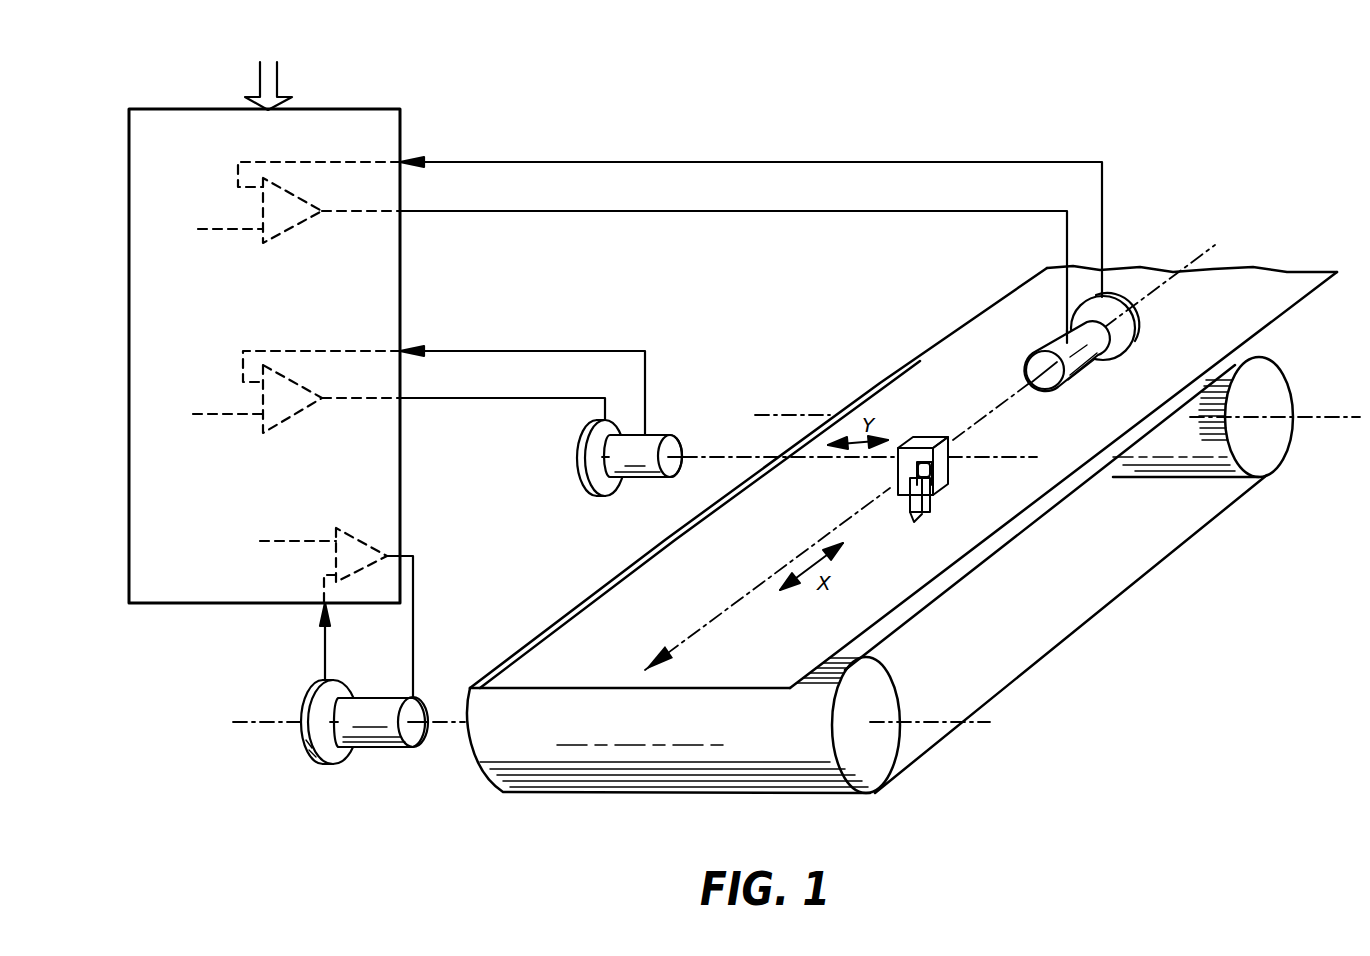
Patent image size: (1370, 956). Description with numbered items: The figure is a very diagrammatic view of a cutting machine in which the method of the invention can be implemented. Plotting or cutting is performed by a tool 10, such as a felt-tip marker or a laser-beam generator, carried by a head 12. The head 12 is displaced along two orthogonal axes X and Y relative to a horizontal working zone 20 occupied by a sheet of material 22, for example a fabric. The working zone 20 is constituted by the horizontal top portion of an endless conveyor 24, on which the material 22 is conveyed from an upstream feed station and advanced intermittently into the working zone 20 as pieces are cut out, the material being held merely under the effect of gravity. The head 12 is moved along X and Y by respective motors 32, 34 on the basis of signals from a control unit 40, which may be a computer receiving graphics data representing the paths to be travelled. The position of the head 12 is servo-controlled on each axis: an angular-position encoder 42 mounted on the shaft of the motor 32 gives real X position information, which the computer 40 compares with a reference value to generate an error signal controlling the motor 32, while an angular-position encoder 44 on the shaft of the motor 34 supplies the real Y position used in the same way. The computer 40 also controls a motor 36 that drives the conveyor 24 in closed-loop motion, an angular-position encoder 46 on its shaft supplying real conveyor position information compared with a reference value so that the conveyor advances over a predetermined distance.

The tool 10 is at (920, 512).
The head 12 is at (938, 470).
The working zone 20 is at (1050, 503).
The sheet of material 22 is at (1270, 282).
The endless conveyor 24 is at (1207, 528).
The motor 32 is at (1075, 373).
The motor 34 is at (660, 433).
The motor 36 is at (387, 747).
The control unit 40 is at (383, 297).
The angular-position encoder 42 is at (1117, 334).
The angular-position encoder 44 is at (600, 490).
The angular-position encoder 46 is at (337, 752).